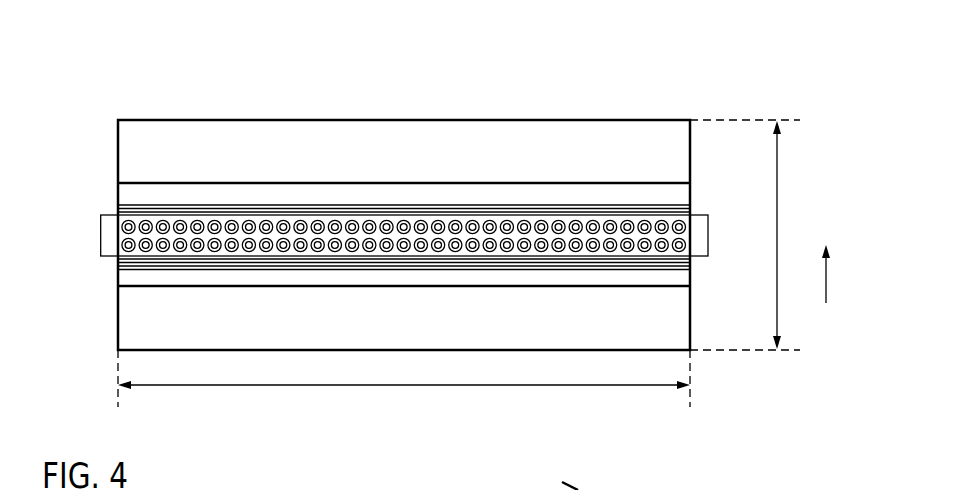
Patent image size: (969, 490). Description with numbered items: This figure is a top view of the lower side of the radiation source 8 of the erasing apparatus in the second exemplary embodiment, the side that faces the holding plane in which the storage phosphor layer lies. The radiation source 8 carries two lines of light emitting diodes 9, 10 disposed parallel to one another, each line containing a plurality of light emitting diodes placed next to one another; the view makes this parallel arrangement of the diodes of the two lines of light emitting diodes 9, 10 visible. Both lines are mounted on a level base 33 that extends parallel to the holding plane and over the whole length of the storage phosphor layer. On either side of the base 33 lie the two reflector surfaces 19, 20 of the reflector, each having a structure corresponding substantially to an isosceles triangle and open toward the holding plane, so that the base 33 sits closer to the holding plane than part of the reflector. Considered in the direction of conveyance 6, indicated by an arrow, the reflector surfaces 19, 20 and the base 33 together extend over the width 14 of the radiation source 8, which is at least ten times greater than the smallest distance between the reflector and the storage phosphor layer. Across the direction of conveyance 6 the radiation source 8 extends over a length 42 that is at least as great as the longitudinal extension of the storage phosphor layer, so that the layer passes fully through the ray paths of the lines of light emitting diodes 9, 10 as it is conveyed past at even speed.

The radiation source 8 is at (637, 81).
The reflector surface 19 is at (120, 153).
The line of light emitting diodes 9 is at (102, 222).
The line of light emitting diodes 10 is at (102, 248).
The reflector surface 20 is at (125, 333).
The base 33 is at (687, 263).
The width 14 is at (777, 163).
The direction of conveyance 6 is at (826, 275).
The length 42 is at (552, 385).